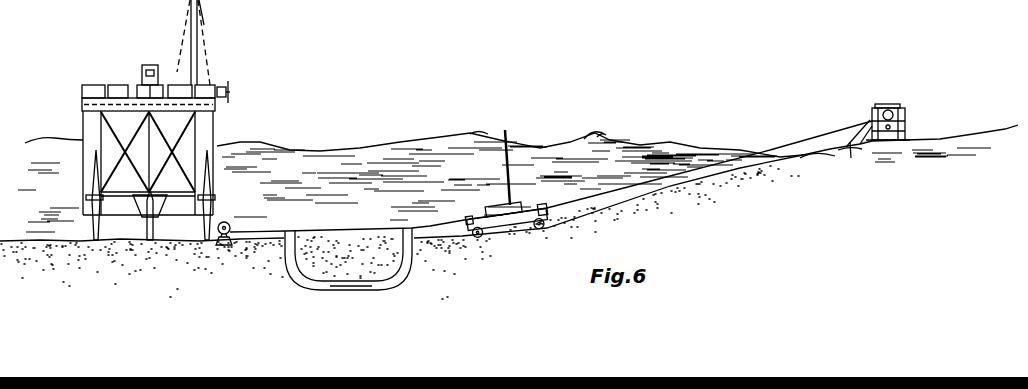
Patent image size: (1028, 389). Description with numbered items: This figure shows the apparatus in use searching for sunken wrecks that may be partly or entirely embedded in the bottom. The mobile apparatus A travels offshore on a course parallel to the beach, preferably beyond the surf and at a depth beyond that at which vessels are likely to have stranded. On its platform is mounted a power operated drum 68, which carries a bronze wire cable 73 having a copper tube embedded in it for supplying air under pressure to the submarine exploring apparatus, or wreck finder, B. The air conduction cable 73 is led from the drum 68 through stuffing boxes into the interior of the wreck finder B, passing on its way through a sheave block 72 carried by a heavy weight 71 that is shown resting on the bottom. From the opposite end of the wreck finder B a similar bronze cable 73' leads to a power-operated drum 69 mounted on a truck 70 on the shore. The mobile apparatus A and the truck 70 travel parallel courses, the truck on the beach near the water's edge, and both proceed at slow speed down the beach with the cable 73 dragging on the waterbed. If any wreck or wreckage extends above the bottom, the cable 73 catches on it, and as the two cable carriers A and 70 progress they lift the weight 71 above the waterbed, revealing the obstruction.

The mobile apparatus A is at (148, 120).
The submarine exploring apparatus B is at (527, 204).
The power operated drum 68 is at (229, 90).
The power-operated drum 69 is at (906, 118).
The truck 70 is at (898, 140).
The heavy weight 71 is at (222, 246).
The sheave block 72 is at (232, 221).
The bronze wire cable 73 is at (450, 233).
The bronze cable 73' is at (771, 147).